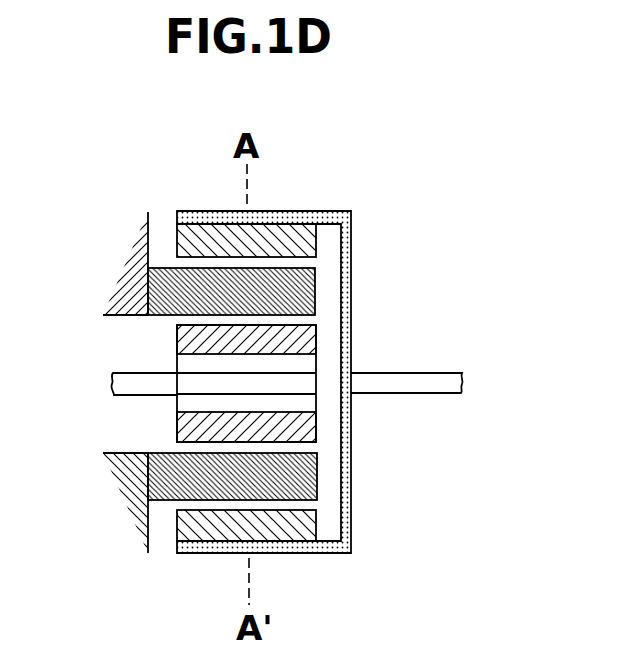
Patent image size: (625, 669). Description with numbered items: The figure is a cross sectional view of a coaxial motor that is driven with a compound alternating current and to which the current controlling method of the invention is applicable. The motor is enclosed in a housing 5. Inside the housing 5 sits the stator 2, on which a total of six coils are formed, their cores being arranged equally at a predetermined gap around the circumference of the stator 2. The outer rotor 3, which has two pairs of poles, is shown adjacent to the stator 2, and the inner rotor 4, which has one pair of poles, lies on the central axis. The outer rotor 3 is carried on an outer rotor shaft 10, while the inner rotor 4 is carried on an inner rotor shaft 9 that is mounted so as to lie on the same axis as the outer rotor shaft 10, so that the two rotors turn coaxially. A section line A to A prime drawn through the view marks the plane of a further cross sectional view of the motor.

The stator 2 is at (312, 285).
The outer rotor 3 is at (316, 236).
The inner rotor 4 is at (312, 335).
The housing 5 is at (318, 553).
The inner rotor shaft 9 is at (138, 396).
The outer rotor shaft 10 is at (398, 393).